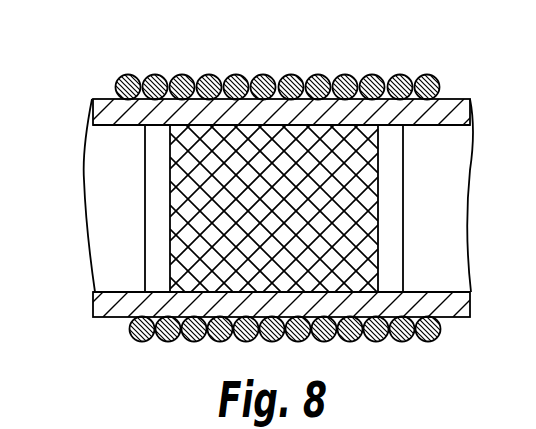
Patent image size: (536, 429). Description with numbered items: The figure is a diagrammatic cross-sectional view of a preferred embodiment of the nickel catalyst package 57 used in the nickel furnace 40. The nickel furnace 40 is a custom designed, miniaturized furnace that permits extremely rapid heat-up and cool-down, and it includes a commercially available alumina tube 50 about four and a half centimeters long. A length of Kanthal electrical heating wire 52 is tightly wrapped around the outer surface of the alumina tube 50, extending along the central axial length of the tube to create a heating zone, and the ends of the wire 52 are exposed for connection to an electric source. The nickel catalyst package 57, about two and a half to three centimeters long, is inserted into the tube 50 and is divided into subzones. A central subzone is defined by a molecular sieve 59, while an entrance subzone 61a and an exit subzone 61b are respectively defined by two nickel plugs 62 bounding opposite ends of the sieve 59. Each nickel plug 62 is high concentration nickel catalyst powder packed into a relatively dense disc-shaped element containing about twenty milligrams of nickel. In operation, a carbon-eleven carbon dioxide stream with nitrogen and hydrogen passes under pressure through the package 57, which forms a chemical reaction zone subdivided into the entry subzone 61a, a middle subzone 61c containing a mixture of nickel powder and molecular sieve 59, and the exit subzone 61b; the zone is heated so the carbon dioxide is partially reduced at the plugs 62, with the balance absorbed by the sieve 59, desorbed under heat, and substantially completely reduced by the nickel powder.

The nickel furnace 40 is at (115, 52).
The alumina tube 50 is at (458, 103).
The electrical heating wire 52 is at (233, 84).
The nickel catalyst package 57 is at (124, 199).
The molecular sieve 59 is at (277, 140).
The entrance subzone 61a is at (160, 268).
The exit subzone 61b is at (397, 194).
The middle subzone 61c is at (197, 268).
The nickel plugs 62 is at (158, 140).